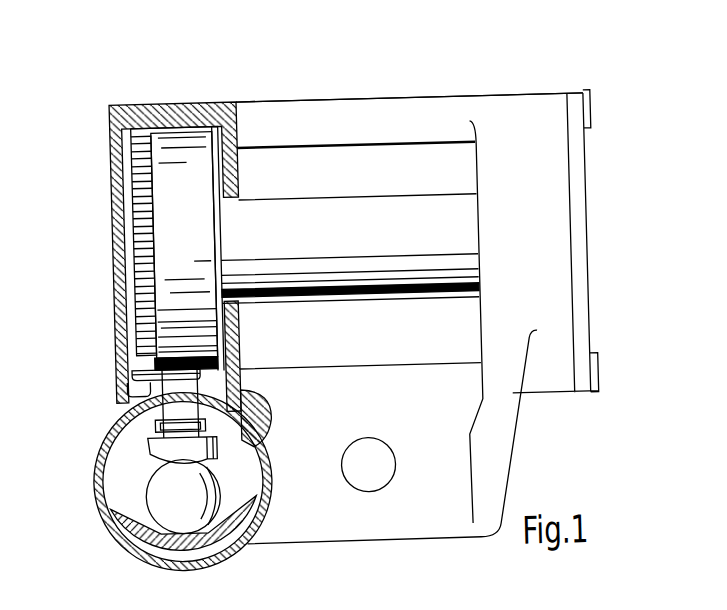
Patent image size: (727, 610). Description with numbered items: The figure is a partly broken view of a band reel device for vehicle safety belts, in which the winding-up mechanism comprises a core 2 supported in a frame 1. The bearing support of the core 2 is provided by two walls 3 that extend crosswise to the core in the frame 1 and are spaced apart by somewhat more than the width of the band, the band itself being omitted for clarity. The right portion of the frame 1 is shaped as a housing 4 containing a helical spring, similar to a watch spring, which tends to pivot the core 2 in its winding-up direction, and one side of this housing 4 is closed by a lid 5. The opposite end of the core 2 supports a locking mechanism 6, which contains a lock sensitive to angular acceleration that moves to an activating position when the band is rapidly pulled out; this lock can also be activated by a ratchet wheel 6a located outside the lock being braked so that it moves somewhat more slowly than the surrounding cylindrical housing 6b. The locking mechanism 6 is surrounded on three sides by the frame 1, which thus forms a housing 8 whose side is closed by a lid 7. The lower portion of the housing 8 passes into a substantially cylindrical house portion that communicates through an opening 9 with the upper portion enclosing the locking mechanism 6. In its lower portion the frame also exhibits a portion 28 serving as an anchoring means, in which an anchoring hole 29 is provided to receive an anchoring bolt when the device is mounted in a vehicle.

The frame 1 is at (249, 94).
The core 2 is at (357, 207).
The walls 3 is at (236, 173).
The housing 4 is at (541, 119).
The lid 5 is at (583, 231).
The locking mechanism 6 is at (174, 128).
The ratchet wheel 6a is at (131, 134).
The cylindrical housing 6b is at (196, 139).
The lid 7 is at (109, 170).
The housing 8 is at (126, 319).
The opening 9 is at (128, 389).
The anchoring portion 28 is at (409, 533).
The anchoring hole 29 is at (361, 449).